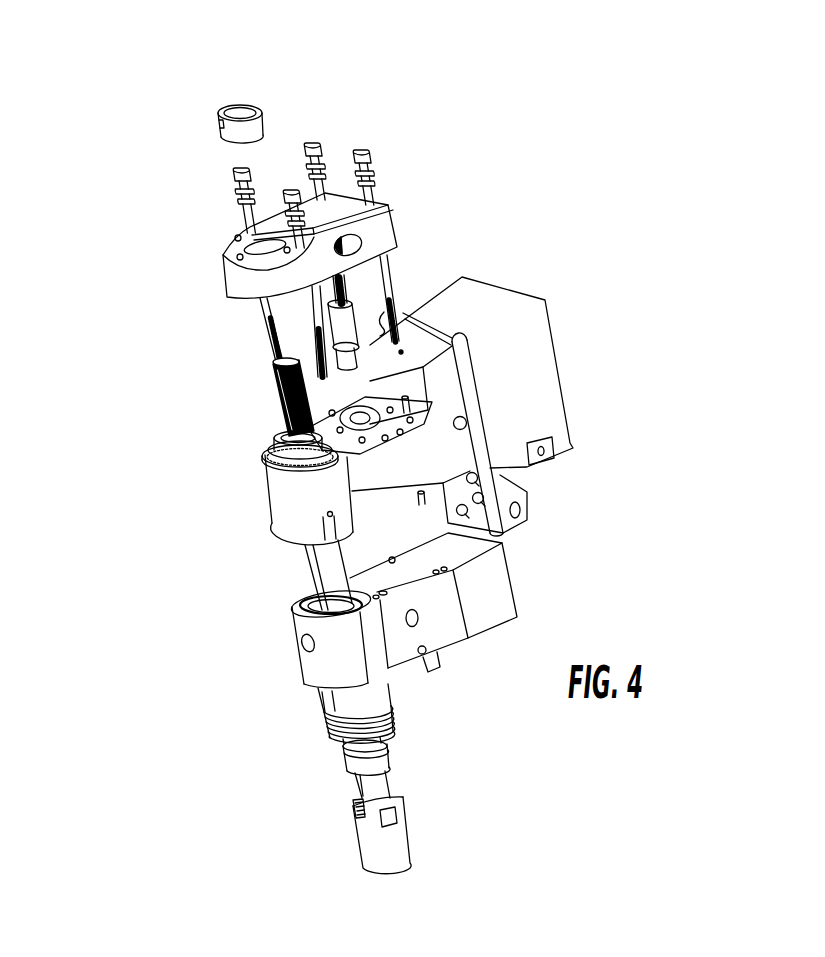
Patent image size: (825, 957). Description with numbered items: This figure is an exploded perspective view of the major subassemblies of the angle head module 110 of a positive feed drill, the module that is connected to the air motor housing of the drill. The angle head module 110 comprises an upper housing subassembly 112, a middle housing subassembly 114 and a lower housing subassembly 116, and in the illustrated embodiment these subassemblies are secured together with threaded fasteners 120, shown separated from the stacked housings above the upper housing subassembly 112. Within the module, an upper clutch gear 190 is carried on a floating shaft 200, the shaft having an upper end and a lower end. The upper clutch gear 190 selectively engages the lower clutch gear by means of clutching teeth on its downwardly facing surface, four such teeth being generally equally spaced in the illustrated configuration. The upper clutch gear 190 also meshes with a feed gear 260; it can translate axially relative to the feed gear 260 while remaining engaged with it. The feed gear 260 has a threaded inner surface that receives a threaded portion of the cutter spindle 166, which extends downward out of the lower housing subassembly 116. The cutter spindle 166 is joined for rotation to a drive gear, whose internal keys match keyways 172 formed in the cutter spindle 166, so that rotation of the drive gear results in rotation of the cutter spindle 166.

The angle head module 110 is at (669, 55).
The upper housing subassembly 112 is at (223, 270).
The middle housing subassembly 114 is at (510, 276).
The lower housing subassembly 116 is at (519, 567).
The threaded fasteners 120 is at (372, 152).
The cutter spindle 166 is at (358, 845).
The keyways 172 is at (303, 566).
The upper clutch gear 190 is at (405, 418).
The floating shaft 200 is at (315, 316).
The feed gear 260 is at (275, 445).